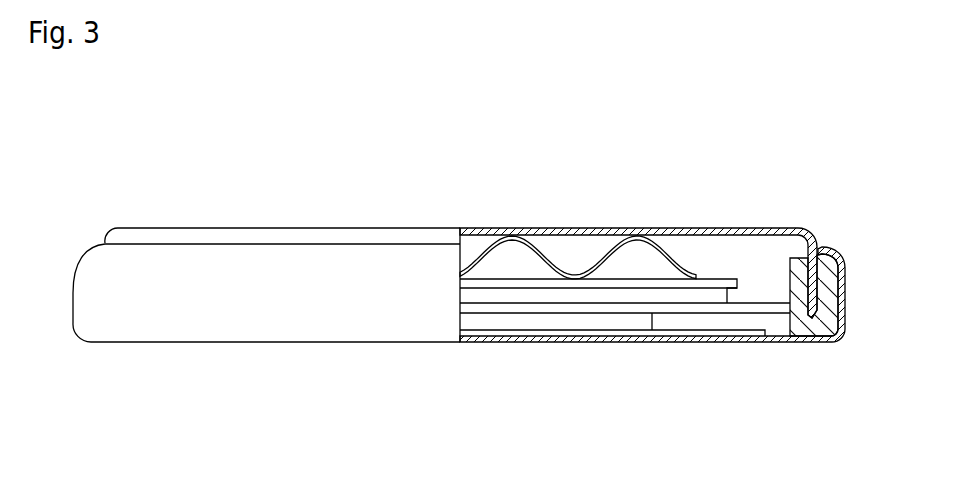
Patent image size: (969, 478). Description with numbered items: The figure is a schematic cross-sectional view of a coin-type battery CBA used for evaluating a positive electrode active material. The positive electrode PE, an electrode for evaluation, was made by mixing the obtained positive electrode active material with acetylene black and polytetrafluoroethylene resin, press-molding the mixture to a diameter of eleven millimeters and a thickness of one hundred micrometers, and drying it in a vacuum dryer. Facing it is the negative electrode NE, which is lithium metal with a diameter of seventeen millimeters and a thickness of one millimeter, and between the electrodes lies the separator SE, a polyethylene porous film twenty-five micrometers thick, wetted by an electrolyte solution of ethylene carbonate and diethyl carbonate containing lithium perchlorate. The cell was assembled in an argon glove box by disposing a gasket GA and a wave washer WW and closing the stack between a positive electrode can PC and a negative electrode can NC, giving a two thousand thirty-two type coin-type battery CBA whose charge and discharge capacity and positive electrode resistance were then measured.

The coin-type battery CBA is at (446, 172).
The negative electrode can NC is at (557, 228).
The positive electrode can PC is at (557, 343).
The gasket GA is at (848, 287).
The wave washer WW is at (672, 258).
The negative electrode NE is at (732, 295).
The separator SE is at (757, 334).
The positive electrode PE is at (600, 331).